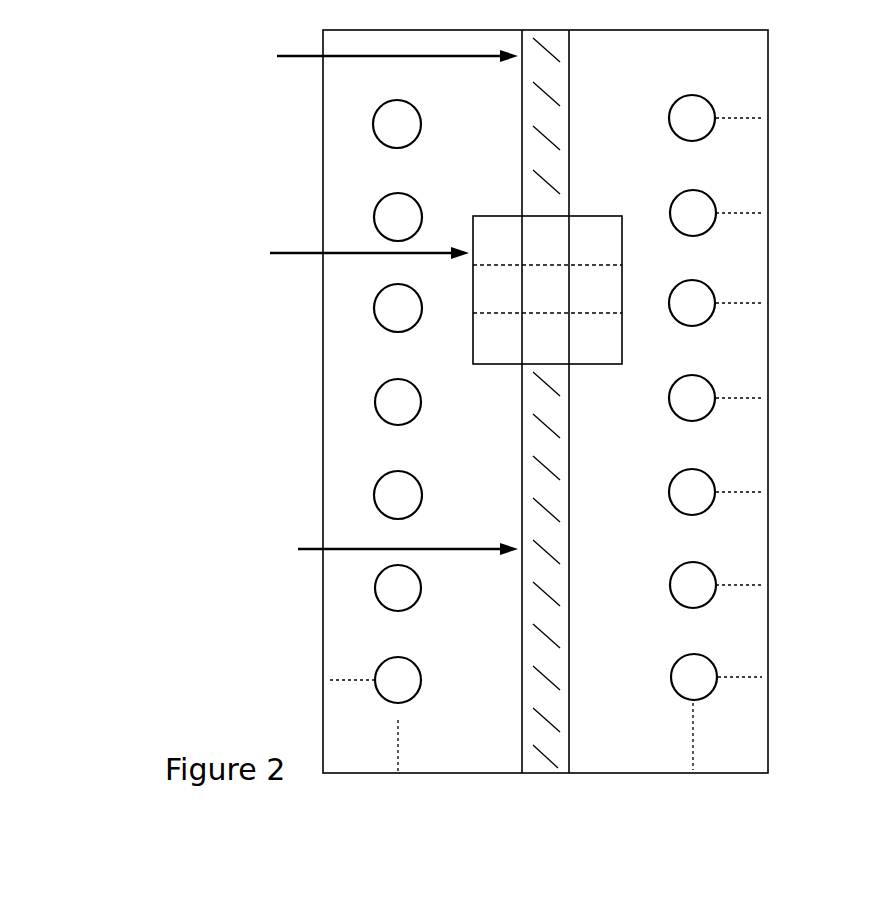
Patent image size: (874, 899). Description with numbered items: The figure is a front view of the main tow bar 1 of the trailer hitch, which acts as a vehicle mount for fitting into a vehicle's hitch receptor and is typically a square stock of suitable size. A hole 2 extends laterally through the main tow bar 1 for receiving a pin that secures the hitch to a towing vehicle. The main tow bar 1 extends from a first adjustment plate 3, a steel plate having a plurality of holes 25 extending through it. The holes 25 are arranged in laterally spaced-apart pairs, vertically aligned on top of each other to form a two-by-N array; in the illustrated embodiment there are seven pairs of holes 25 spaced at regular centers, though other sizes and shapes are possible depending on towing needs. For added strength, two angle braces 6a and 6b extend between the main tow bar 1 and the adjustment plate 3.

The main tow bar 1 is at (354, 251).
The hole 2 is at (547, 290).
The first adjustment plate 3 is at (340, 158).
The angle brace 6a is at (377, 63).
The angle brace 6b is at (370, 548).
The holes 25 is at (387, 495).